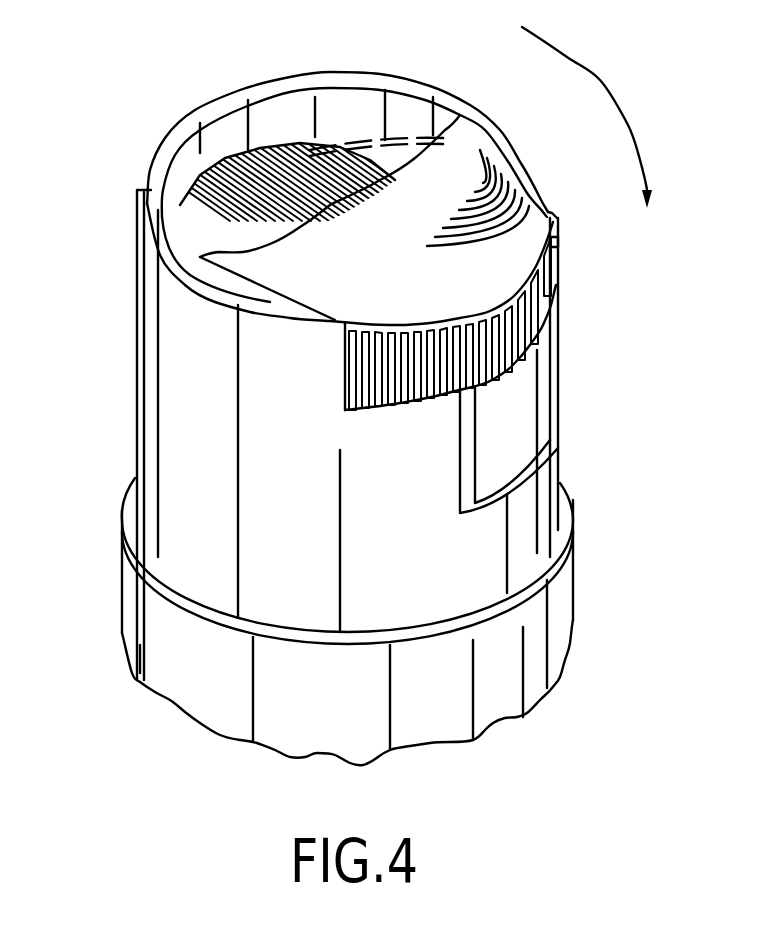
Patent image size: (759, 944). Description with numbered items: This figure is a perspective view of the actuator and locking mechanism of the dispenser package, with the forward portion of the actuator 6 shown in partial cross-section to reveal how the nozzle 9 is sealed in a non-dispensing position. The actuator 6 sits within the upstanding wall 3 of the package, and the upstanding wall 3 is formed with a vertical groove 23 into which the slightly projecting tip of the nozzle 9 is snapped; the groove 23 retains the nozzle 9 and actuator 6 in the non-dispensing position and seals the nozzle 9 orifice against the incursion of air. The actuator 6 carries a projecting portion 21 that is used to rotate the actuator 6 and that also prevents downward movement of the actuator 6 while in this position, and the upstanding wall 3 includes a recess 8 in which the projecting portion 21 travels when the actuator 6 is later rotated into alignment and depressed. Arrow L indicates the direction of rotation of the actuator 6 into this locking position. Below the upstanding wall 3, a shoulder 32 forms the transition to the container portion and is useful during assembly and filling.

The upstanding wall portion 3 is at (205, 528).
The vertical groove 23 is at (223, 131).
The nozzle 9 is at (200, 152).
The actuator 6 is at (553, 270).
The projecting portion 21 is at (553, 318).
The recess 8 is at (560, 386).
The shoulder 32 is at (572, 540).
The arrow L is at (603, 83).